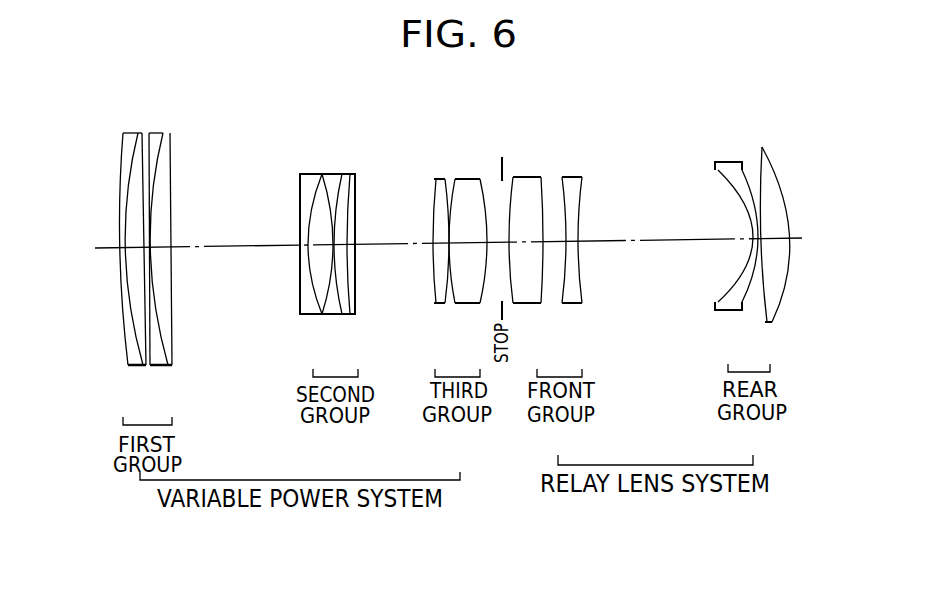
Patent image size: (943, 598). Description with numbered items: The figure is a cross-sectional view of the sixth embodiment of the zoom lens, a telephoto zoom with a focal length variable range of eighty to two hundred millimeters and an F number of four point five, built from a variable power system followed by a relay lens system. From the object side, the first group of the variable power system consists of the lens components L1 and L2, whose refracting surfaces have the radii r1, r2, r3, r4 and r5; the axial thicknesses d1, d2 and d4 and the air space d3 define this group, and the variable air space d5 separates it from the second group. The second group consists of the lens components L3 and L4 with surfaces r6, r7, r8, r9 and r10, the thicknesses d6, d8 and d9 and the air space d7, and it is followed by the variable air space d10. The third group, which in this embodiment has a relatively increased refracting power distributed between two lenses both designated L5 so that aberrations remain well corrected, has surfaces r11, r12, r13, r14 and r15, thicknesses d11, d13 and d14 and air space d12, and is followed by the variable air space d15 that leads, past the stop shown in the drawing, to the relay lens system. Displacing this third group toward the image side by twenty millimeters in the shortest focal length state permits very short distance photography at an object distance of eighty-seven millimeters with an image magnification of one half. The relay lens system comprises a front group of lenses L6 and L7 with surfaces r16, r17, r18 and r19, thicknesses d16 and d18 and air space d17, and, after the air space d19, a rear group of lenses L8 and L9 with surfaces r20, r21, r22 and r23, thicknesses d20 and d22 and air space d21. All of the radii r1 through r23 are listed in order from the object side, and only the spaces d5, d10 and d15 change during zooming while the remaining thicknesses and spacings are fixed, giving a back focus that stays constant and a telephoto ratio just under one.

The positive lens component L1 is at (120, 246).
The cemented positive lens component L2 is at (171, 246).
The cemented negative lens component L3 is at (300, 234).
The negative lens component L4 is at (347, 234).
The cemented positive lens component L5 is at (454, 239).
The first lens of front group of relay lens system L6 is at (529, 239).
The second lens of front group of relay lens system L7 is at (585, 235).
The first lens of rear group of relay lens system L8 is at (724, 232).
The second lens of rear group of relay lens system L9 is at (768, 232).
The radius of curvature of the first refracting surface r1 is at (121, 140).
The radius of curvature of the second refracting surface r2 is at (137, 135).
The radius of curvature of the third refracting surface r3 is at (142, 133).
The radius of curvature of the fourth refracting surface r4 is at (163, 134).
The radius of curvature of the fifth refracting surface r5 is at (169, 133).
The radius of curvature of the sixth refracting surface r6 is at (297, 173).
The radius of curvature of the seventh refracting surface r7 is at (312, 174).
The radius of curvature of the eighth refracting surface r8 is at (327, 174).
The radius of curvature of the ninth refracting surface r9 is at (338, 174).
The radius of curvature of the tenth refracting surface r10 is at (359, 174).
The radius of curvature of the eleventh refracting surface r11 is at (428, 178).
The radius of curvature of the twelfth refracting surface r12 is at (442, 178).
The radius of curvature of the thirteenth refracting surface r13 is at (451, 178).
The radius of curvature of the fourteenth refracting surface r14 is at (467, 178).
The radius of curvature of the fifteenth refracting surface r15 is at (483, 178).
The radius of curvature of the sixteenth refracting surface r16 is at (513, 177).
The radius of curvature of the seventeenth refracting surface r17 is at (541, 177).
The radius of curvature of the eighteenth refracting surface r18 is at (562, 177).
The radius of curvature of the nineteenth refracting surface r19 is at (586, 177).
The radius of curvature of the twentieth refracting surface r20 is at (713, 166).
The radius of curvature of the twenty-first refracting surface r21 is at (740, 162).
The radius of curvature of the twenty-second refracting surface r22 is at (758, 157).
The radius of curvature of the twenty-third refracting surface r23 is at (771, 153).
The axial thickness d1 is at (117, 245).
The axial thickness d2 is at (137, 249).
The axial air space d3 is at (150, 228).
The axial thickness d4 is at (161, 249).
The variable axial air space d5 is at (243, 246).
The axial thickness d6 is at (300, 243).
The axial air space d7 is at (320, 244).
The axial thickness d8 is at (337, 228).
The axial thickness d9 is at (343, 248).
The variable axial air space d10 is at (395, 245).
The axial thickness d11 is at (433, 240).
The axial air space d12 is at (448, 246).
The axial thickness d13 is at (468, 241).
The axial thickness d14 is at (488, 222).
The variable axial air space d15 is at (495, 246).
The axial thickness d16 is at (526, 240).
The axial air space d17 is at (558, 240).
The axial thickness d18 is at (580, 240).
The axial air space d19 is at (666, 241).
The axial thickness d20 is at (748, 232).
The axial air space d21 is at (752, 248).
The axial thickness d22 is at (778, 234).